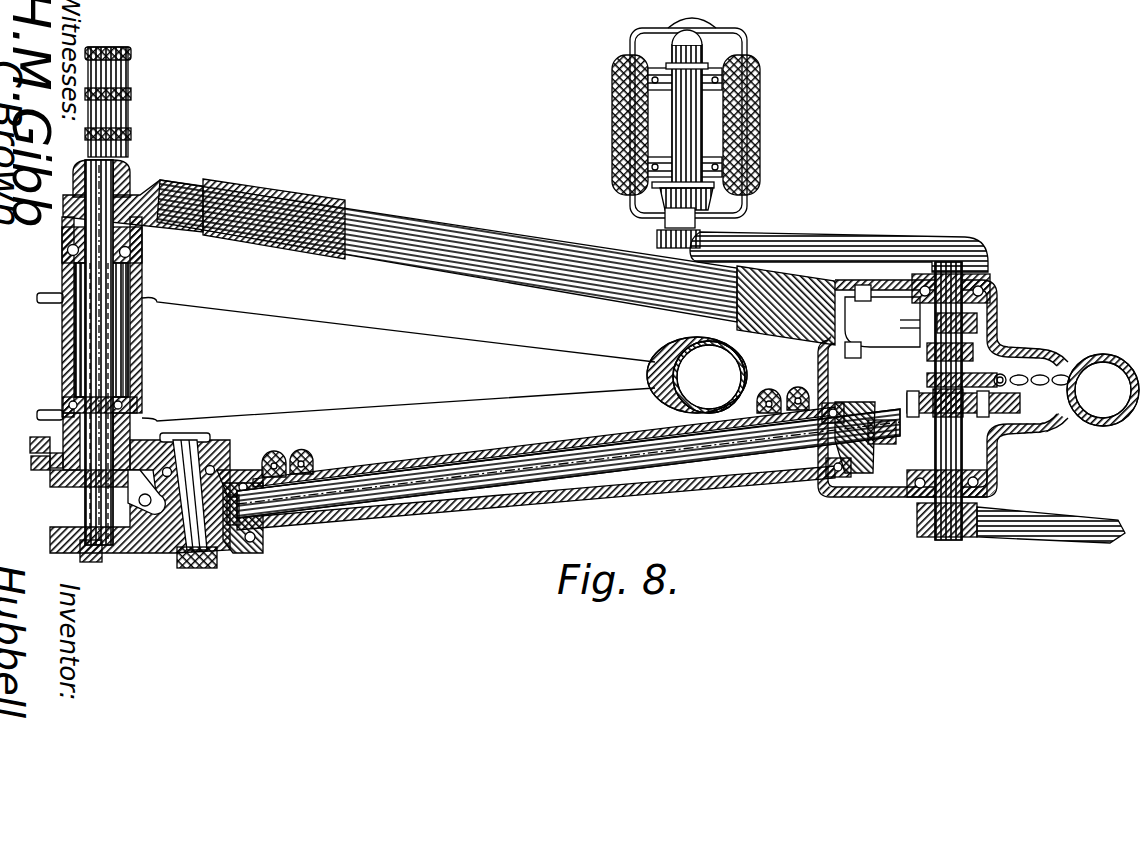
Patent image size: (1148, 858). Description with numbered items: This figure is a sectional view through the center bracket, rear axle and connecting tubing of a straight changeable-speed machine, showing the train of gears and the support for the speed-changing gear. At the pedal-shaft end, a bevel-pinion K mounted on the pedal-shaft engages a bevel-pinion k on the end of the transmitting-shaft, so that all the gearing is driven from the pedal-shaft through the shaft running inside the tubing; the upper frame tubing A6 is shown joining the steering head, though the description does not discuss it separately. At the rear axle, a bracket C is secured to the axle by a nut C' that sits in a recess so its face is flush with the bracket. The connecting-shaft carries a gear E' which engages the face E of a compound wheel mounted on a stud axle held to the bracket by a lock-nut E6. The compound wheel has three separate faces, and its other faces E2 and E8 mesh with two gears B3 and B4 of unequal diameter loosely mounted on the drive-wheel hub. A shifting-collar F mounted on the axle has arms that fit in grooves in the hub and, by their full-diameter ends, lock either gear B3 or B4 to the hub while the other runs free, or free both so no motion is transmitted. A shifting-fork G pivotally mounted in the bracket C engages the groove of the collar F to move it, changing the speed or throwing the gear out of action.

The top frame tube A6 is at (130, 197).
The gear B3 is at (34, 445).
The gear B4 is at (34, 468).
The shifting-collar F is at (62, 488).
The shifting-fork G is at (136, 498).
The bracket C is at (181, 517).
The nut C' is at (140, 516).
The compound wheel face E is at (256, 466).
The compound wheel face E2 is at (232, 464).
The compound wheel face E8 is at (218, 450).
The lock-nut E6 is at (197, 569).
The gear on the connecting-shaft E' is at (240, 531).
The bevel-pinion K is at (900, 367).
The bevel-pinion k is at (868, 456).